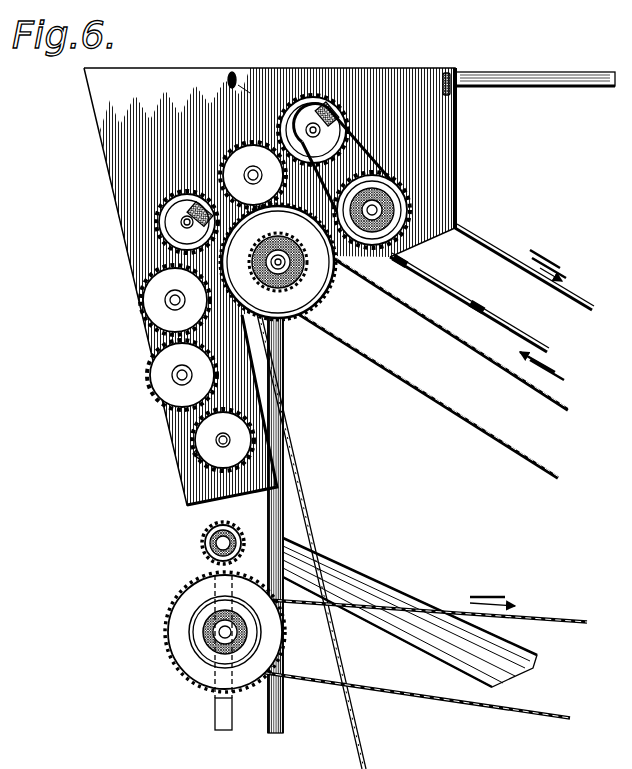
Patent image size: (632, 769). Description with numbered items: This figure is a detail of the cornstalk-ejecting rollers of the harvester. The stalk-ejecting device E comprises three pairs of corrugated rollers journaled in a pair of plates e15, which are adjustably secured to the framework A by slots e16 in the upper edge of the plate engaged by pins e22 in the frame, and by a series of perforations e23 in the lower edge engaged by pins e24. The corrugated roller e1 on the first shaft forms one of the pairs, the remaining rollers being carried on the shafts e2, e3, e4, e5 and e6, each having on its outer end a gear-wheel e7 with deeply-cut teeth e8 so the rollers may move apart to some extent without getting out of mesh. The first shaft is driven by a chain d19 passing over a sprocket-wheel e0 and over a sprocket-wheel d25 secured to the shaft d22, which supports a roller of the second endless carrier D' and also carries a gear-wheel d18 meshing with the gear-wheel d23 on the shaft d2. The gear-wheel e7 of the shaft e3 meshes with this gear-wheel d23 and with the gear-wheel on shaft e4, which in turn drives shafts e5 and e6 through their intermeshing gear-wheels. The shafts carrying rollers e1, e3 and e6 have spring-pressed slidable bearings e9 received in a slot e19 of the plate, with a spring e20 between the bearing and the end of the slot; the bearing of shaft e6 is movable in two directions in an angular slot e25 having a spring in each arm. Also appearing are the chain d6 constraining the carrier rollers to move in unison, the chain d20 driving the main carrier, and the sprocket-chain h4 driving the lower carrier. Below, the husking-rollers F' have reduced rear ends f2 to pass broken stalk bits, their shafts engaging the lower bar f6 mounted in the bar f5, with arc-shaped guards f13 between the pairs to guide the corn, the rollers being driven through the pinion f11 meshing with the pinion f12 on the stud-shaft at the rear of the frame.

The stalk-ejecting device E is at (117, 115).
The frame bar A is at (590, 87).
The pins e22 is at (232, 72).
The slots e16 is at (238, 85).
The corrugated roller e1 is at (226, 96).
The gear-wheel d18 is at (412, 243).
The second endless carrier D' is at (477, 316).
The chain d6 is at (465, 418).
The shaft d2 is at (288, 325).
The bar f5 is at (275, 710).
The sprocket-chain h4 is at (345, 733).
The channel bar F' is at (410, 612).
The guards f13 is at (405, 590).
The chain d20 is at (449, 700).
The lower bar f6 is at (300, 548).
The gear-wheels e7 is at (325, 110).
The sprocket-wheel e0 is at (343, 118).
The chain d19 is at (365, 158).
The shaft d22 is at (385, 208).
The sprocket-wheel d25 is at (412, 180).
The slot e19 is at (315, 70).
The plates e15 is at (205, 112).
The shaft e2 is at (240, 168).
The shaft e3 is at (180, 222).
The spring-pressed slidable bearings e9 is at (345, 118).
The spring e20 is at (335, 112).
The gear-wheel d23 is at (307, 292).
The deeply-cut teeth e8 is at (168, 365).
The shaft e4 is at (165, 305).
The shaft e5 is at (180, 378).
The shaft e6 is at (208, 440).
The angular slot e25 is at (195, 463).
The pins e24 is at (240, 497).
The perforations e23 is at (203, 540).
The pinion f12 is at (192, 650).
The reduced rear ends f2 is at (308, 590).
The pinion f11 is at (193, 568).